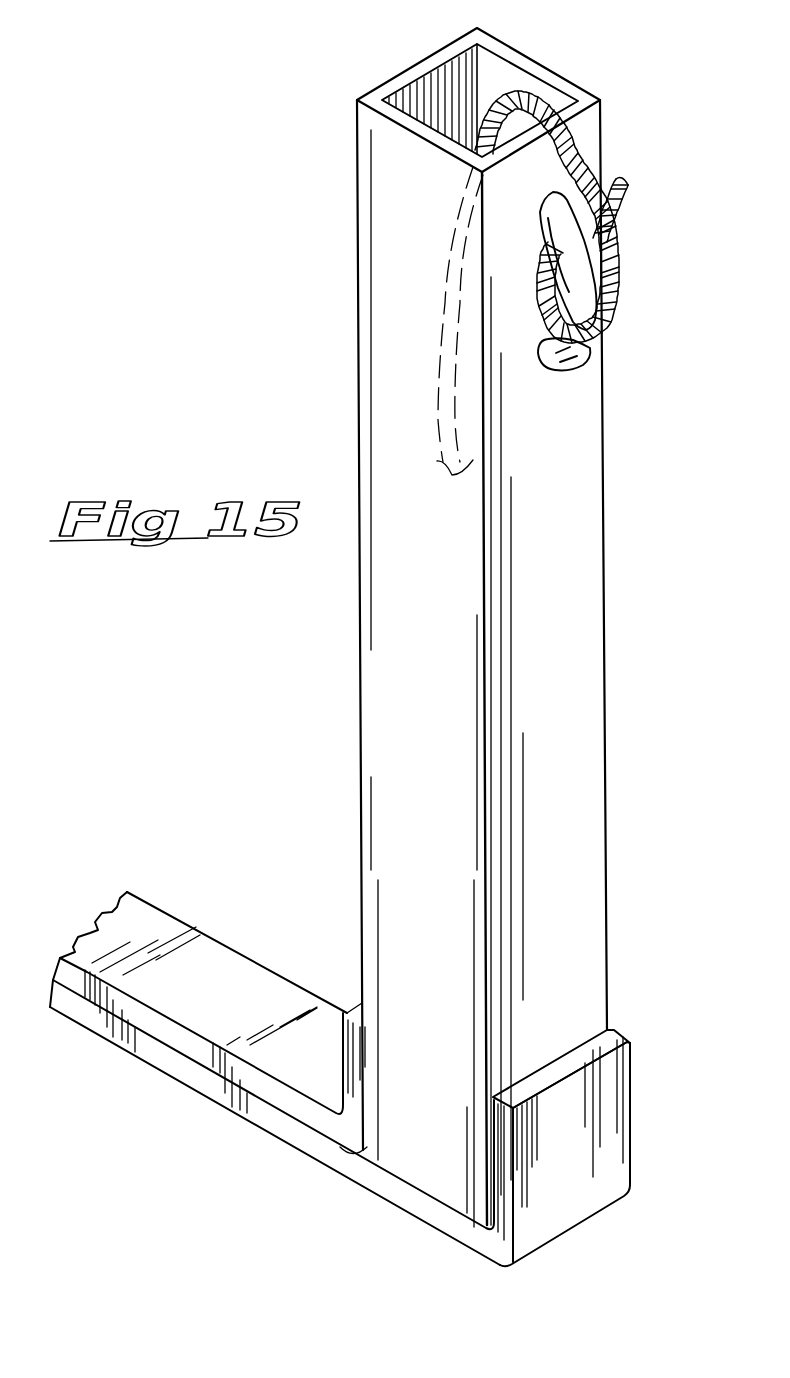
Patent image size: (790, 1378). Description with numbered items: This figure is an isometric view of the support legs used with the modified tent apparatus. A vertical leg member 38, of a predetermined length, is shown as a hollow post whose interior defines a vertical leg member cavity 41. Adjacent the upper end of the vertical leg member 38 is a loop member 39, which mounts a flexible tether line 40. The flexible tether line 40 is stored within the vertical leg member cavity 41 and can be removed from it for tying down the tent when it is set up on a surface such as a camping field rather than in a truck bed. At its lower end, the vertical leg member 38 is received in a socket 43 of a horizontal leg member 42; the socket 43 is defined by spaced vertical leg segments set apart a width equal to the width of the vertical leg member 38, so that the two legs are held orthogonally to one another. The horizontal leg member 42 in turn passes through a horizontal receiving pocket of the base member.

The vertical leg member 38 is at (572, 632).
The loop member 39 is at (588, 352).
The flexible tether line 40 is at (572, 133).
The vertical leg member cavity 41 is at (490, 73).
The horizontal leg member 42 is at (280, 1126).
The socket 43 is at (407, 1177).